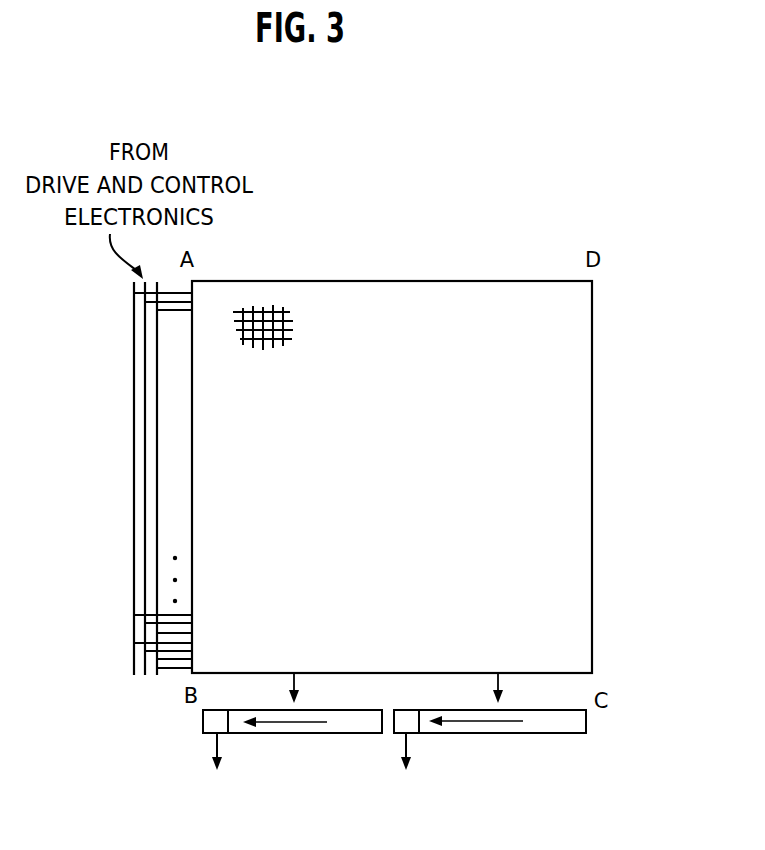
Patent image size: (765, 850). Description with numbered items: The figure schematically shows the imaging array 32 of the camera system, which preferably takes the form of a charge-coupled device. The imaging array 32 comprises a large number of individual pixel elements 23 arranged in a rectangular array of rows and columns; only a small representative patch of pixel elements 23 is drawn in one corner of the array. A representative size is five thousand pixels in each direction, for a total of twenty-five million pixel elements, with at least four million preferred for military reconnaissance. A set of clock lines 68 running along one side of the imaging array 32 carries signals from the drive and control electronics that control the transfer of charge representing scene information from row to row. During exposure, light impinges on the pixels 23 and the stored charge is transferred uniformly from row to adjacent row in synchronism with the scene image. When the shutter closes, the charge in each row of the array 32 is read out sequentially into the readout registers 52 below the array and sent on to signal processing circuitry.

The pixel elements 23 is at (280, 307).
The imaging array 32 is at (592, 484).
The clock lines 68 is at (120, 480).
The readout registers 52 is at (348, 734).